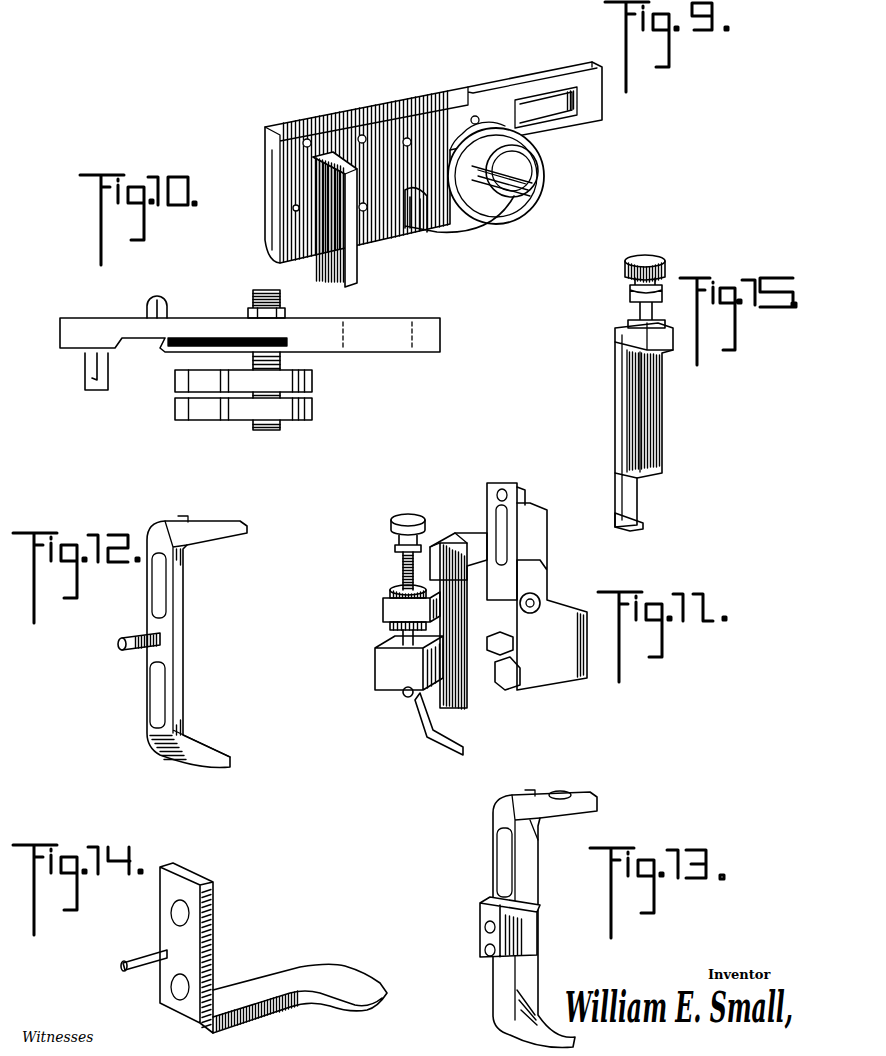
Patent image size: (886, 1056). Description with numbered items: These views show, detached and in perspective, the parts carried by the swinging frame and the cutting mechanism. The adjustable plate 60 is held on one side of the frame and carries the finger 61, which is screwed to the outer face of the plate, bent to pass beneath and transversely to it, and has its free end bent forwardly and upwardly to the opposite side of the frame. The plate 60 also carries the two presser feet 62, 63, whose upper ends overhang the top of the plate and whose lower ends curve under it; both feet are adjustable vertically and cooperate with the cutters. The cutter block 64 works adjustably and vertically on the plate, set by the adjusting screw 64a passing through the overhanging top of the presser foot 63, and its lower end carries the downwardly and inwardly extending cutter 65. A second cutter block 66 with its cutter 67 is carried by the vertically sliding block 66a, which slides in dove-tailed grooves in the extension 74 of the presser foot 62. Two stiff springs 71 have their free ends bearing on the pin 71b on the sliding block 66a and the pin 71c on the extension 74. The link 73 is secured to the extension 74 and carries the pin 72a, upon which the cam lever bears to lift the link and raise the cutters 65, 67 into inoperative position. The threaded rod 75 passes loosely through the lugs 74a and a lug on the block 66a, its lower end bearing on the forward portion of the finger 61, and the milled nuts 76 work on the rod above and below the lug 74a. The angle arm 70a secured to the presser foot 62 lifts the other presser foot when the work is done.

In FIG. 9, the adjustable plate 60 is at (410, 101).
In FIG. 10, the adjustable plate 60 is at (213, 326).
In FIG. 9, the stiff springs 71 is at (547, 170).
In FIG. 10, the stiff springs 71 is at (312, 385).
In FIG. 15, the adjusting screw 64a is at (667, 268).
In FIG. 15, the cutter block 64 is at (622, 393).
In FIG. 11, the cutter block 64 is at (487, 515).
In FIG. 15, the cutter 65 is at (640, 517).
In FIG. 12, the presser foot 63 is at (173, 628).
In FIG. 11, the threaded rod 75 is at (400, 560).
In FIG. 11, the milled nuts 76 is at (400, 584).
In FIG. 11, the outwardly extending lugs 74a is at (385, 607).
In FIG. 11, the extension 74 is at (492, 628).
In FIG. 11, the vertically sliding block 66a is at (430, 550).
In FIG. 11, the pin 72a is at (520, 495).
In FIG. 11, the vertically movable link 73 is at (525, 508).
In FIG. 11, the pin 71c is at (513, 645).
In FIG. 11, the pin 71b is at (520, 680).
In FIG. 11, the cutter block 66 is at (405, 698).
In FIG. 11, the cutter 67 is at (455, 748).
In FIG. 14, the finger 61 is at (257, 977).
In FIG. 13, the presser foot 62 is at (527, 883).
In FIG. 13, the angle arm 70a is at (537, 937).